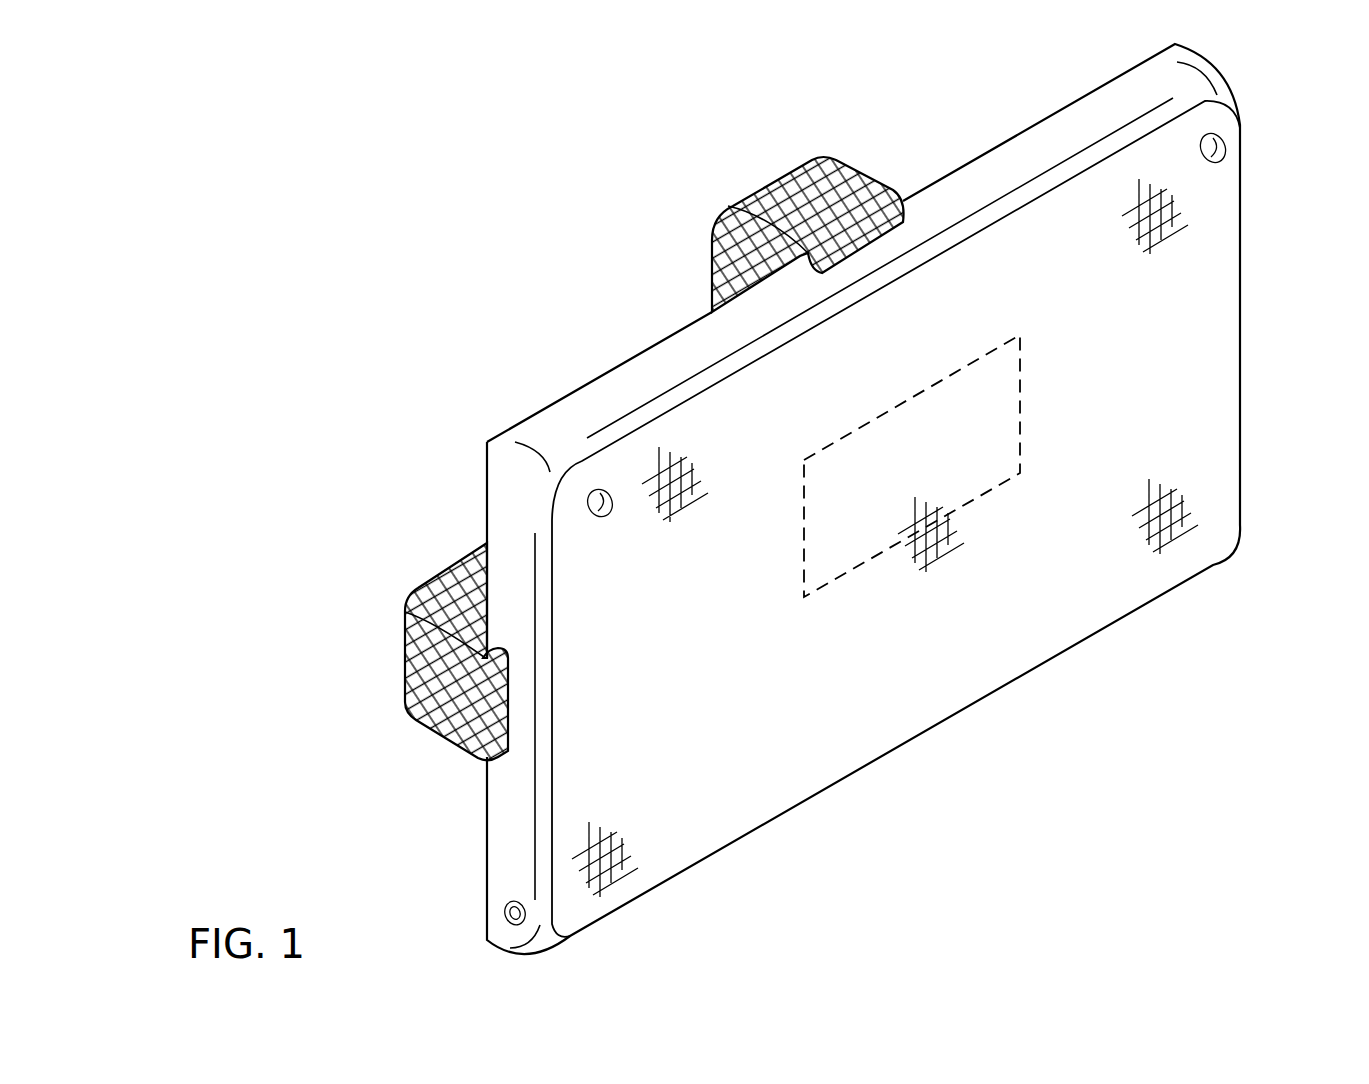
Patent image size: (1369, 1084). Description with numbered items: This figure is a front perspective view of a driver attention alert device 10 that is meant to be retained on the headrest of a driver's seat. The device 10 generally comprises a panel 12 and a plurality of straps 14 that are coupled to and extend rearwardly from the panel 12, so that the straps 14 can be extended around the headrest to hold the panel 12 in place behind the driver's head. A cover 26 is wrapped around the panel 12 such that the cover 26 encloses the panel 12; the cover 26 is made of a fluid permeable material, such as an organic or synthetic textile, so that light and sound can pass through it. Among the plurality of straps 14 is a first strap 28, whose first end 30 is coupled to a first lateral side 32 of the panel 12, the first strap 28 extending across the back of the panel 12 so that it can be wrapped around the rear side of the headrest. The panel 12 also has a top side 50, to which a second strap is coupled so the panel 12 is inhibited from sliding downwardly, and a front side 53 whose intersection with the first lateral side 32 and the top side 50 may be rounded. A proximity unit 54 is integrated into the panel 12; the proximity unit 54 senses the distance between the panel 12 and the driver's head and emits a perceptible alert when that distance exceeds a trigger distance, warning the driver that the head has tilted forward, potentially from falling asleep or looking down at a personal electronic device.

The driver attention alert device 10 is at (417, 188).
The panel 12 is at (502, 410).
The plurality of straps 14 is at (762, 196).
The cover 26 is at (1180, 218).
The first strap 28 is at (382, 647).
The first end 30 is at (508, 707).
The first lateral side 32 is at (515, 500).
The top side 50 is at (996, 162).
The front side 53 is at (904, 689).
The proximity unit 54 is at (997, 487).